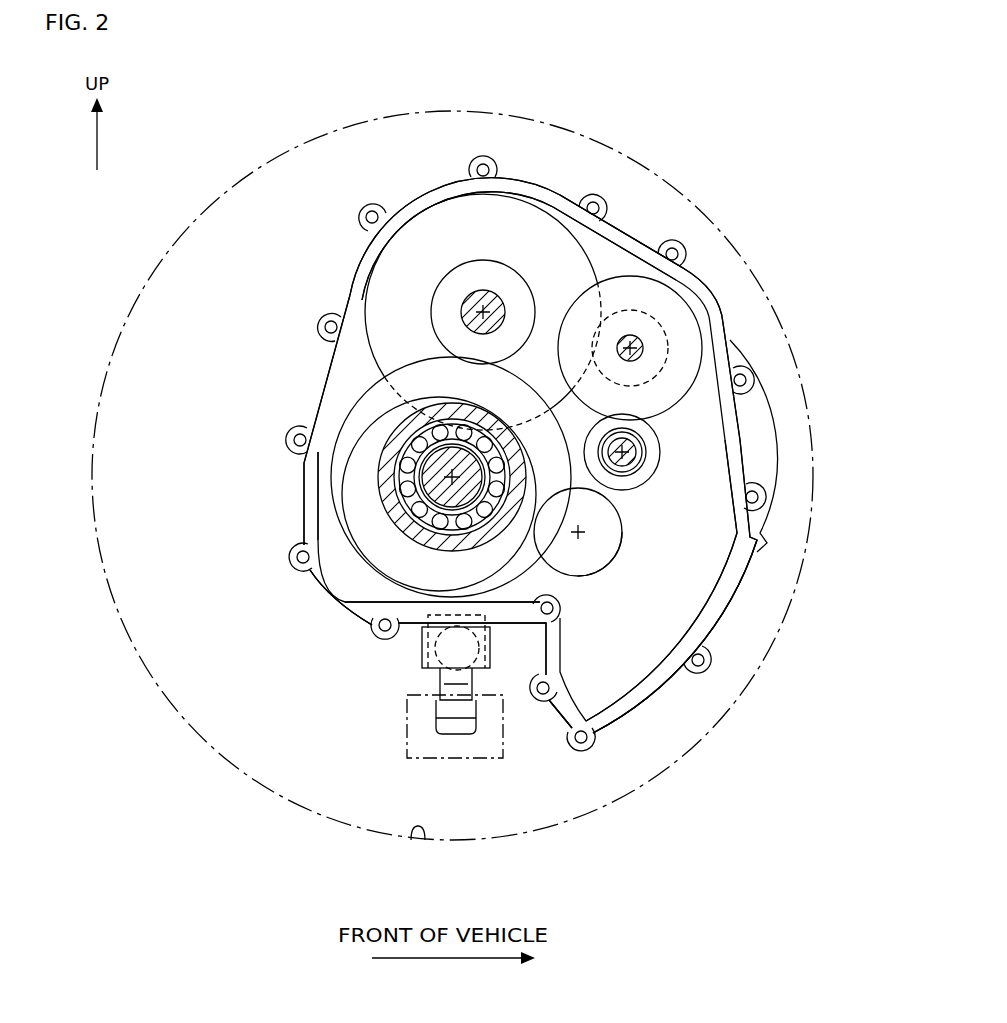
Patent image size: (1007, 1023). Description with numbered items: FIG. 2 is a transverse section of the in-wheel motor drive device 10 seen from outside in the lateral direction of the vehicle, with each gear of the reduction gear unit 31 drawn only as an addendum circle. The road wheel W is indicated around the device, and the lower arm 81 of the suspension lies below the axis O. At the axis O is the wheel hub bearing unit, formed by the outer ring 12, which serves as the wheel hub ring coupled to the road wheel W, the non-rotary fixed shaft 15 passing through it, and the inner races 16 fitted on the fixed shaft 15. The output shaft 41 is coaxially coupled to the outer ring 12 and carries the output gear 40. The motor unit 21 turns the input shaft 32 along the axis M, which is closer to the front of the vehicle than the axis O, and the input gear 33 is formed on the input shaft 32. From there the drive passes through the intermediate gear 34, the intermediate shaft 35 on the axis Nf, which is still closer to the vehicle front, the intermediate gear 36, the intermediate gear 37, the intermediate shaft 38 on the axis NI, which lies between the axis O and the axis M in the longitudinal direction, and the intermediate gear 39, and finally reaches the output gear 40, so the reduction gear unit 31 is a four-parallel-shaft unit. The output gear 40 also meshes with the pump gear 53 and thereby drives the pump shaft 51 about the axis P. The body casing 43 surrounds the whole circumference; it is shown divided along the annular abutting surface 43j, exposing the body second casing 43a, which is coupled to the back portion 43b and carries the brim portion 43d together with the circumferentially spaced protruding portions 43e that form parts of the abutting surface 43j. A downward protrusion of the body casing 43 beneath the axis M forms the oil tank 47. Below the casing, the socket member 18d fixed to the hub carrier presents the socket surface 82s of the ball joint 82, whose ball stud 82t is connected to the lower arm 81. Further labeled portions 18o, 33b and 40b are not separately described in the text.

The in-wheel motor drive device 10 is at (407, 186).
The outer ring 12 is at (395, 479).
The fixed shaft 15 is at (375, 542).
The inner races 16 is at (383, 500).
The socket member 18d is at (422, 636).
The oil outlet 18o is at (432, 668).
The motor unit 21 is at (762, 413).
The reduction gear unit 31 is at (350, 290).
The input shaft 32 is at (645, 458).
The input gear 33 is at (656, 445).
The boss portion 33b is at (728, 513).
The intermediate gear 34 is at (702, 331).
The intermediate shaft 35 is at (640, 340).
The intermediate gear 36 is at (646, 312).
The intermediate gear 37 is at (580, 262).
The intermediate shaft 38 is at (493, 298).
The intermediate gear 39 is at (468, 300).
The output gear 40 is at (372, 395).
The lower portion 40b is at (343, 603).
The output shaft 41 is at (381, 463).
The body casing 43 is at (633, 246).
The body second casing 43a is at (457, 246).
The back portion 43b is at (607, 238).
The brim portion 43d is at (318, 595).
The protruding portions 43e is at (289, 558).
The abutting surface 43j is at (326, 545).
The oil tank 47 is at (612, 683).
The pump shaft 51 is at (605, 552).
The pump gear 53 is at (607, 571).
The lower arm 81 is at (405, 748).
The ball joint 82 is at (399, 695).
The socket surface 82s is at (438, 655).
The ball stud 82t is at (448, 720).
The axis of output shaft O is at (452, 477).
The axis of intermediate shaft NI is at (472, 305).
The axis of intermediate shaft Nf is at (638, 356).
The axis of input shaft M is at (620, 487).
The axis of pump shaft P is at (578, 538).
The road wheel W is at (427, 846).